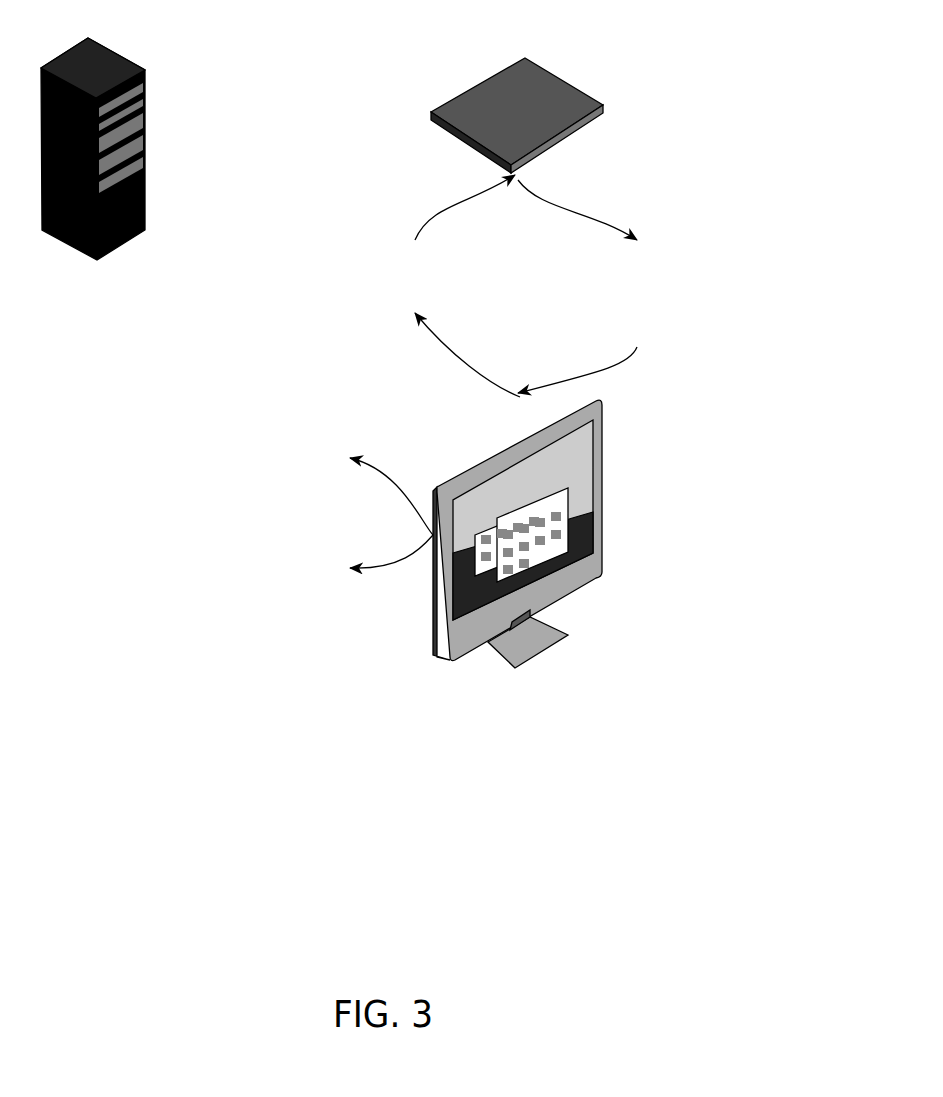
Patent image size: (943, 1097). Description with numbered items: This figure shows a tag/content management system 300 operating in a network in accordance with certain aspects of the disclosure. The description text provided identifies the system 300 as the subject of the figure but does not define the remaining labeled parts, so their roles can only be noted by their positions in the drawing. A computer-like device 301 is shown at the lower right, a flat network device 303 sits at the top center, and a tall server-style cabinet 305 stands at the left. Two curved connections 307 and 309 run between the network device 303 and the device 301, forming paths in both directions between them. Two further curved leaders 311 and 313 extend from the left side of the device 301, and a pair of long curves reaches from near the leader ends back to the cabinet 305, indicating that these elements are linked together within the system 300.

The tag/content management system 300 is at (727, 175).
The client device / display 301 is at (550, 534).
The network device / router 303 is at (484, 115).
The server 305 is at (207, 555).
The communication path 307 is at (456, 286).
The communication path 309 is at (584, 286).
The input 311 is at (346, 490).
The output 313 is at (346, 554).